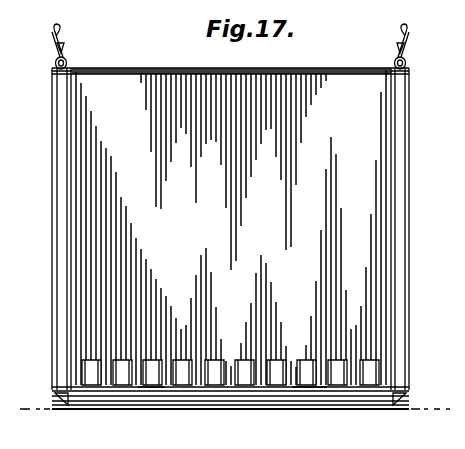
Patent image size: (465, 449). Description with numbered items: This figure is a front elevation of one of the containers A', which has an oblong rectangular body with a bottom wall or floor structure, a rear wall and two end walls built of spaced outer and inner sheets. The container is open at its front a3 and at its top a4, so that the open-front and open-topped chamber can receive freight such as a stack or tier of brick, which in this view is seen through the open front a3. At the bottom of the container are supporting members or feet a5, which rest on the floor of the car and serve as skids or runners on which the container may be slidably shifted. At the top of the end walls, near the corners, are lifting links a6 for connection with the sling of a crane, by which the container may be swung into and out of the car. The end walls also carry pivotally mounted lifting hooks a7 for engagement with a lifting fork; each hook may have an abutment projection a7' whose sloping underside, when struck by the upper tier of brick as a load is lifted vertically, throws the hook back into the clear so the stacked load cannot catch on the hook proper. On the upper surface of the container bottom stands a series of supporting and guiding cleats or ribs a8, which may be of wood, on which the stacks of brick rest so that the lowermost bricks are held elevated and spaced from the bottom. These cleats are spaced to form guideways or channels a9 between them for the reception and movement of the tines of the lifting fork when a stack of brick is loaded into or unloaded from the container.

The container A' is at (230, 229).
The front a3 is at (352, 262).
The top a4 is at (146, 70).
The supporting members or feet a5 is at (236, 403).
The lifting links a6 is at (67, 62).
The lifting hooks a7 is at (243, 40).
The abutment projection a7' is at (215, 42).
The supporting and guiding cleats or ribs a8 is at (125, 370).
The guideways or channels a9 is at (160, 397).